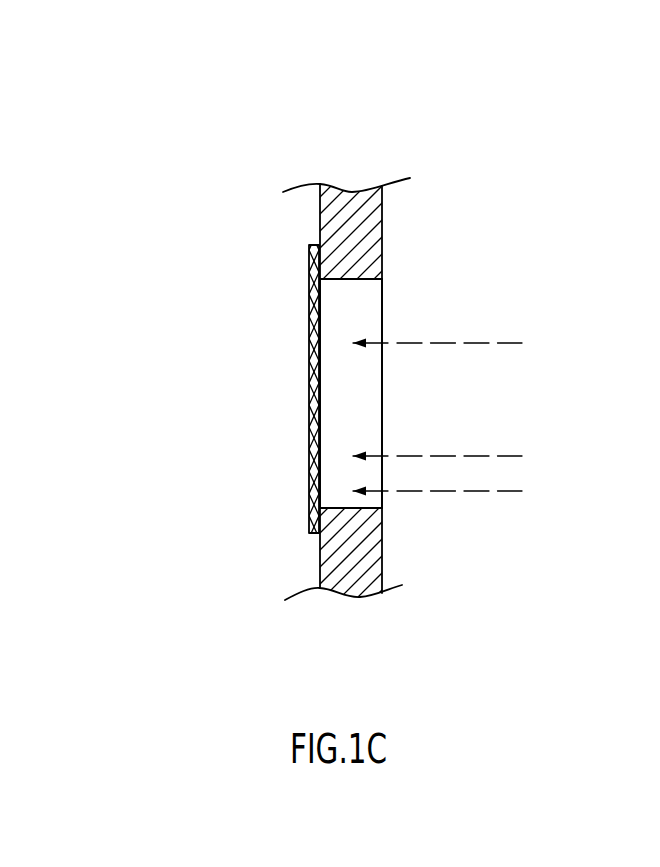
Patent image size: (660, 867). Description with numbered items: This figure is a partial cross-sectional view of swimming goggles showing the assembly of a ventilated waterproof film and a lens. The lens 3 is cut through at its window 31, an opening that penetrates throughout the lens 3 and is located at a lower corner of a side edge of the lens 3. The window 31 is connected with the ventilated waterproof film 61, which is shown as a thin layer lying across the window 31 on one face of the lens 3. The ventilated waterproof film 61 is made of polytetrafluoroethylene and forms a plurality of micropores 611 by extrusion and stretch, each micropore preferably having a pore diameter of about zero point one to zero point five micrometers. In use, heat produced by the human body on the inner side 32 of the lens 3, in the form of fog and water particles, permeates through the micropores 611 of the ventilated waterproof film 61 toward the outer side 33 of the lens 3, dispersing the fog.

The lens 3 is at (350, 208).
The window 31 is at (368, 405).
The inner side 32 is at (380, 230).
The outer side 33 is at (312, 555).
The ventilated waterproof film 61 is at (300, 256).
The micropores 611 is at (309, 378).